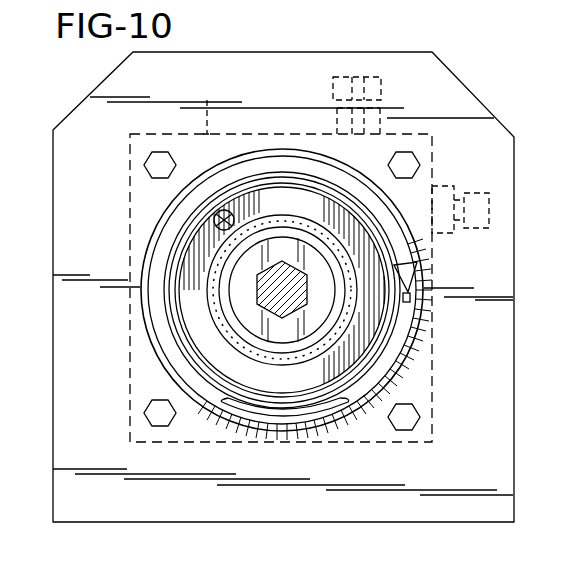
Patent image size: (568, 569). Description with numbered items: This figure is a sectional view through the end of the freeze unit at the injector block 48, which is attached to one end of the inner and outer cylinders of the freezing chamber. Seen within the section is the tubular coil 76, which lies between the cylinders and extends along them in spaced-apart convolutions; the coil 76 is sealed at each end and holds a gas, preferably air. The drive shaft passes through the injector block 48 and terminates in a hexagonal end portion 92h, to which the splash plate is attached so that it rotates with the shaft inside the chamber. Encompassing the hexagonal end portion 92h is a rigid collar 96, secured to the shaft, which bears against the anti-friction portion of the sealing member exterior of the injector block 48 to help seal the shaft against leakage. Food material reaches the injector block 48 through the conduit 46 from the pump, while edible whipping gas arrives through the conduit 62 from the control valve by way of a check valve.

The conduit 46 is at (358, 77).
The injector block 48 is at (207, 100).
The conduit 62 is at (464, 205).
The tubular coil 76 is at (177, 212).
The hexagonal end portion 92h is at (258, 292).
The rigid collar 96 is at (322, 305).